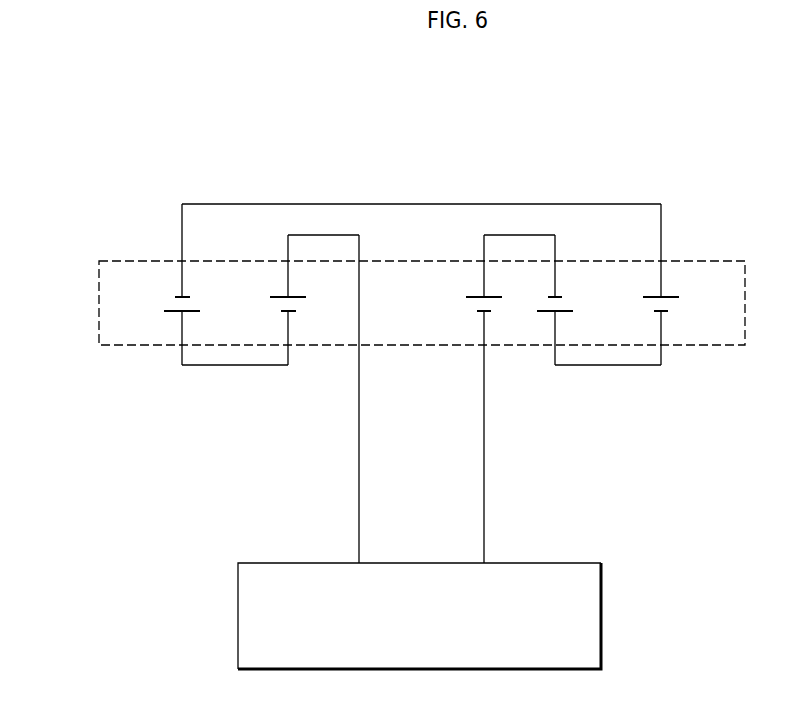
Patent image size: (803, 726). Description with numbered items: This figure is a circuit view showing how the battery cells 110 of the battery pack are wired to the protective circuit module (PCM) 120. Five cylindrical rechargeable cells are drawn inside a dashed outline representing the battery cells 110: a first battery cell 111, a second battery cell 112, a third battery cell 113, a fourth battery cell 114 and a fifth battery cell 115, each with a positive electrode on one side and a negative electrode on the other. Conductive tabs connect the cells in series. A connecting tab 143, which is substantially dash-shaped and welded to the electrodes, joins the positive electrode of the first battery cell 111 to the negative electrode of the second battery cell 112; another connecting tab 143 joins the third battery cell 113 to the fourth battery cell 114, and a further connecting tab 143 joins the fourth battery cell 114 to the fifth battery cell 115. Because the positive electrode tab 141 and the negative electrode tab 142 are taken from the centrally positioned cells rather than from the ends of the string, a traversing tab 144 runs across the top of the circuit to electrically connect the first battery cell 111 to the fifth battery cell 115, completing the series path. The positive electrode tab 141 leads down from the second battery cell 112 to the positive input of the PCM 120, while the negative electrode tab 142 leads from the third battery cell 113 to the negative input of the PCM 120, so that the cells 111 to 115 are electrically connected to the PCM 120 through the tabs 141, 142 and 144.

The battery cells 110 is at (99, 302).
The first battery cell 111 is at (165, 304).
The second battery cell 112 is at (270, 304).
The third battery cell 113 is at (466, 304).
The fourth battery cell 114 is at (574, 304).
The fifth battery cell 115 is at (680, 304).
The protective circuit module 120 is at (602, 616).
The positive electrode tab 141 is at (359, 467).
The negative electrode tab 142 is at (484, 467).
The connecting tab 143 is at (233, 365).
The traversing tab 144 is at (421, 204).